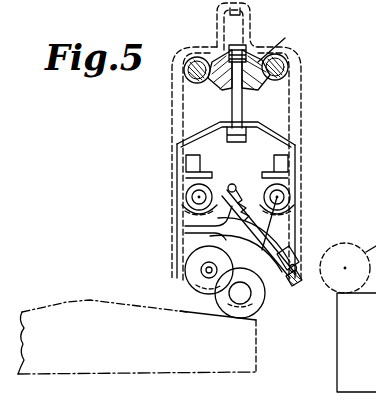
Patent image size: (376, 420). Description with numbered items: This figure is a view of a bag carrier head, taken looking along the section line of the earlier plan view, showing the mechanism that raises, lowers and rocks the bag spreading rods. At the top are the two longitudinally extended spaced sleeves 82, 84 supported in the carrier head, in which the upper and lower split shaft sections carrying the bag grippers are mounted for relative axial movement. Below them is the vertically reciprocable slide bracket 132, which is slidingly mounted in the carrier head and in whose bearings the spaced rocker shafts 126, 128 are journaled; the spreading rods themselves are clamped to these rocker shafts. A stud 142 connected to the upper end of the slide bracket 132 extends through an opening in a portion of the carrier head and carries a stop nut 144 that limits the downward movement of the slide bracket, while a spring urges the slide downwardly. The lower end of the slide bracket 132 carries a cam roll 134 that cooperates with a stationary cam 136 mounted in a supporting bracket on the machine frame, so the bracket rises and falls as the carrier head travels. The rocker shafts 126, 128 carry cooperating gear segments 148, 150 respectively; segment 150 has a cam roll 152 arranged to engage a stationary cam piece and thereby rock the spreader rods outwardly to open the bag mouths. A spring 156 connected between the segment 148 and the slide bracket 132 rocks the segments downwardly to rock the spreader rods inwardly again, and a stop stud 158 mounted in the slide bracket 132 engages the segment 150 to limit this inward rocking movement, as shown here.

The sleeve 82 is at (192, 58).
The sleeve 84 is at (292, 60).
The rocker shaft 126 is at (198, 197).
The rocker shaft 128 is at (278, 197).
The slide bracket 132 is at (297, 118).
The cam roll 134 is at (256, 319).
The stationary cam 136 is at (195, 373).
The stud 142 is at (248, 100).
The stop nut 144 is at (246, 48).
The gear segment 148 is at (185, 228).
The gear segment 150 is at (272, 250).
The cam roll 152 is at (186, 278).
The spring 156 is at (273, 258).
The stop stud 158 is at (294, 288).